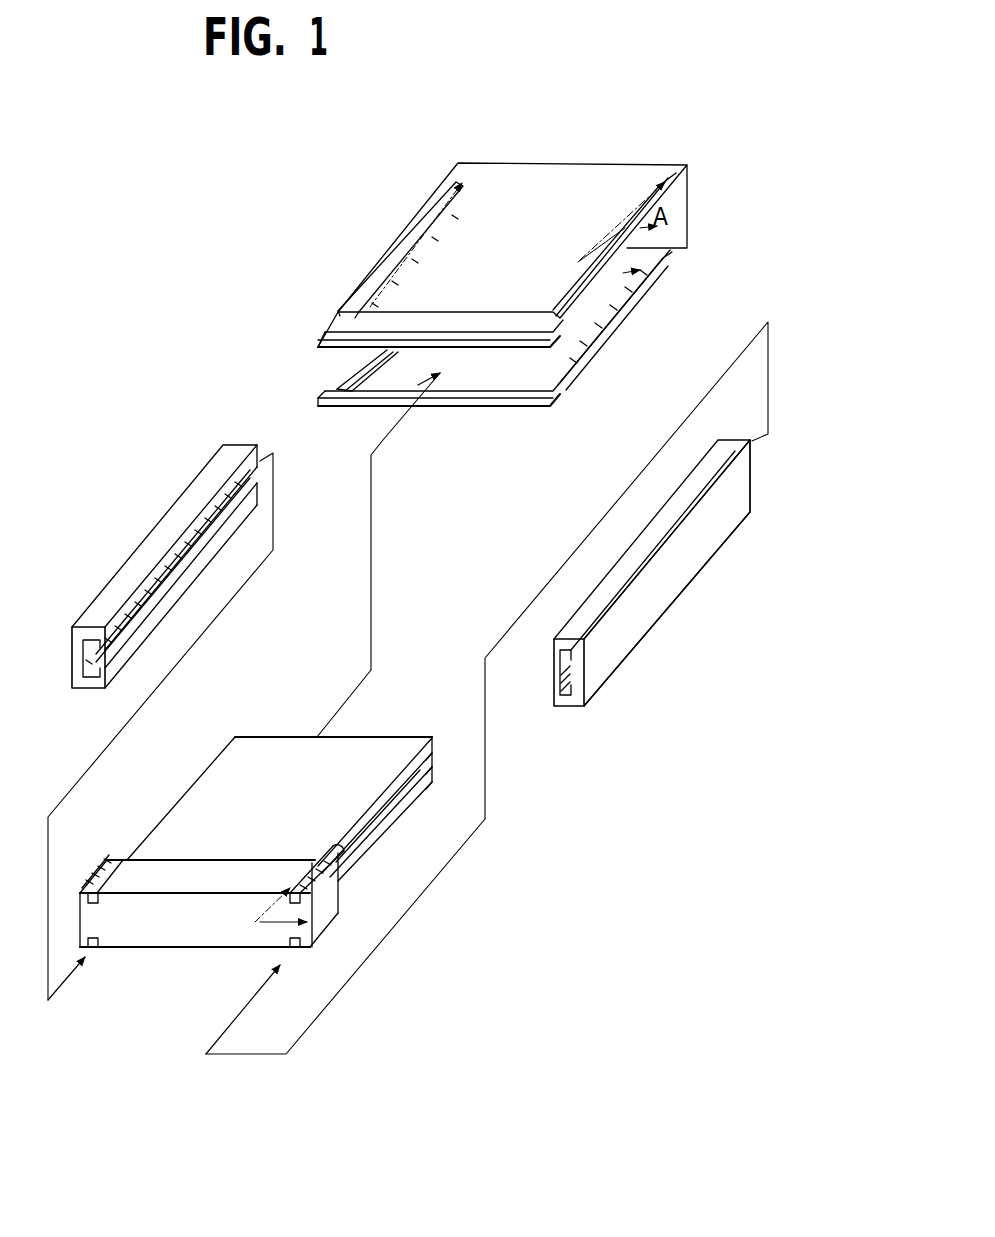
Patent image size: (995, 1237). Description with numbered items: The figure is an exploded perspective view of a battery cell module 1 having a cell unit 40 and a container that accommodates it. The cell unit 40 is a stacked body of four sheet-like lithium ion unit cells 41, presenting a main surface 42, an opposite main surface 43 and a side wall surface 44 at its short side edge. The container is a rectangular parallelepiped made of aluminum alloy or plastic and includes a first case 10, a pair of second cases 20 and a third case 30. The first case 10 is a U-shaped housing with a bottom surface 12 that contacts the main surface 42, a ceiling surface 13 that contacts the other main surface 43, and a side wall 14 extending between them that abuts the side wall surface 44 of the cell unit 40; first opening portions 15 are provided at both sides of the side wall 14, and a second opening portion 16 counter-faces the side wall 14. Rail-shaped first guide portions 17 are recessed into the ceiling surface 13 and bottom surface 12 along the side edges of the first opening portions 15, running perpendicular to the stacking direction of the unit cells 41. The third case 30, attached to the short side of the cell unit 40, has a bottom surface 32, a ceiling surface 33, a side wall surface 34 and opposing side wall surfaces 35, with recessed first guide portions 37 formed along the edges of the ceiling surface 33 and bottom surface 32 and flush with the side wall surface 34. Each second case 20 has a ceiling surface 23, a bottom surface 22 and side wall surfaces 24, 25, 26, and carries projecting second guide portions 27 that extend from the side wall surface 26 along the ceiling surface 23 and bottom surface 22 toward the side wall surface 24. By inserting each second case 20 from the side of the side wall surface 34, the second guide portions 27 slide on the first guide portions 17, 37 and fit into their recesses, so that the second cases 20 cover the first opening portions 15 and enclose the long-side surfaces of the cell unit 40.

The battery cell module 1 is at (172, 133).
The first case 10 is at (535, 118).
The bottom surface of first case 12 is at (458, 393).
The ceiling surface of first case 13 is at (578, 182).
The side wall of first case 14 is at (688, 227).
The first opening portion 15 is at (653, 283).
The second opening portion 16 is at (512, 375).
The first guide portion 17 is at (428, 215).
The second case 20 is at (197, 403).
The bottom surface of second case 22 is at (592, 693).
The ceiling surface of second case 23 is at (163, 537).
The side wall surface of second case 24 is at (755, 479).
The side wall surface of second case 25 is at (651, 605).
The side wall surface of second case 26 is at (72, 653).
The second guide portion 27 is at (102, 633).
The third case 30 is at (188, 983).
The bottom surface of third case 32 is at (138, 950).
The ceiling surface of third case 33 is at (153, 868).
The side wall surface of third case 34 is at (263, 938).
The side wall surface of third case 35 is at (80, 927).
The first guide portion 37 is at (108, 875).
The cell unit 40 is at (388, 690).
The unit cell 41 is at (437, 733).
The main surface of cell unit 42 is at (357, 870).
The main surface of cell unit 43 is at (265, 737).
The side wall surface of cell unit 44 is at (413, 737).